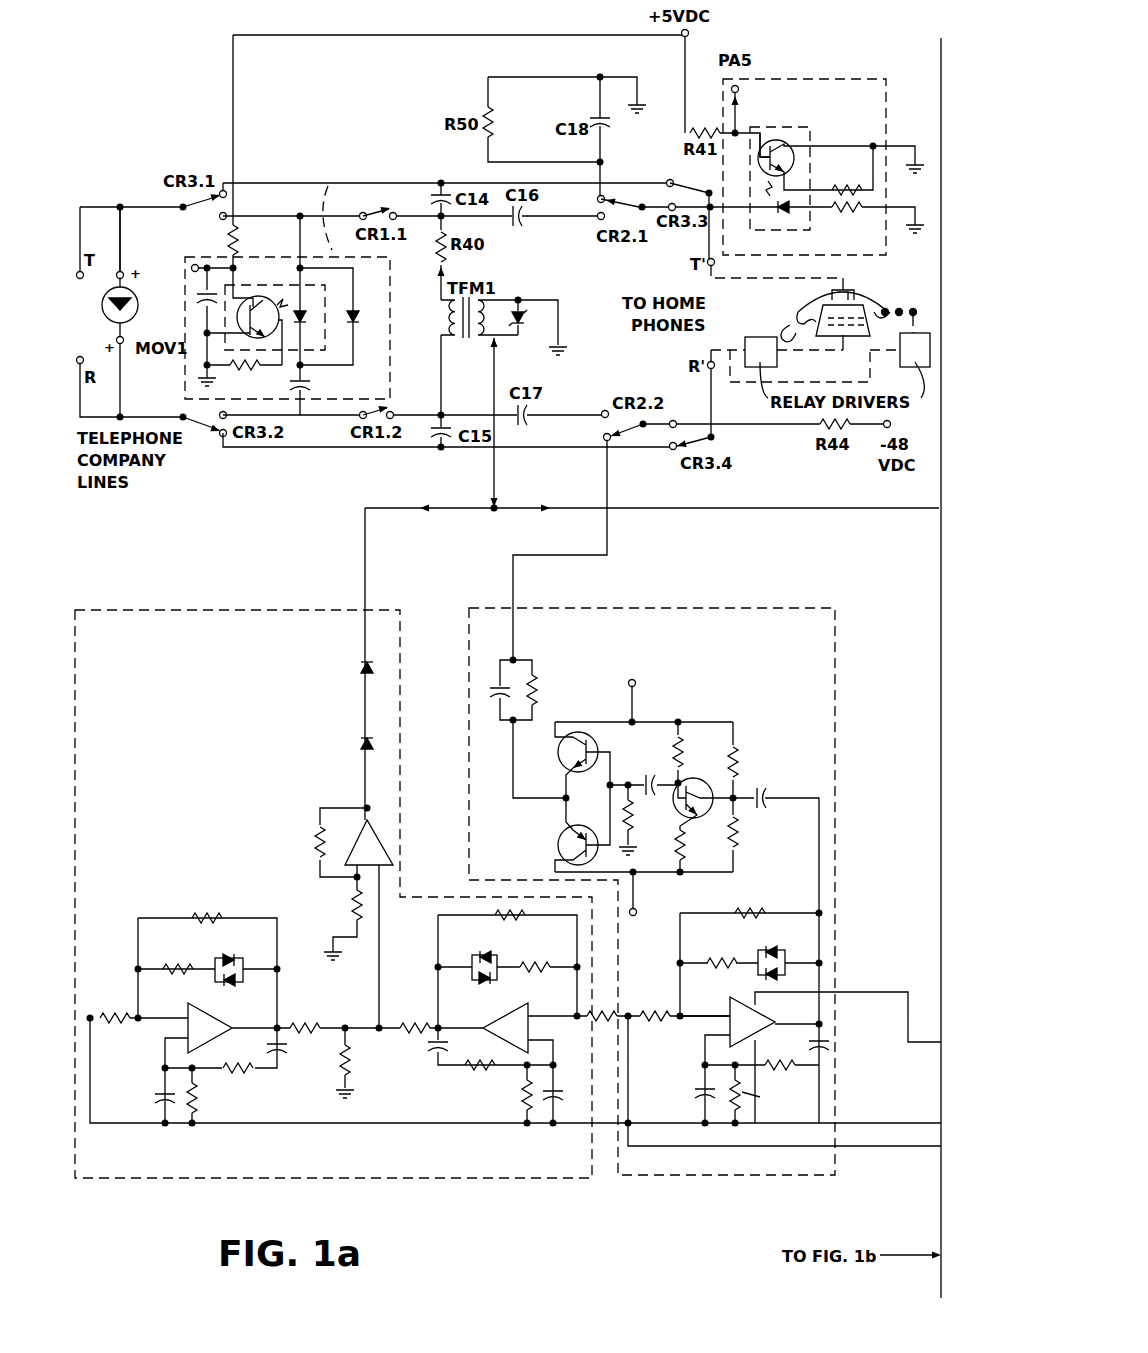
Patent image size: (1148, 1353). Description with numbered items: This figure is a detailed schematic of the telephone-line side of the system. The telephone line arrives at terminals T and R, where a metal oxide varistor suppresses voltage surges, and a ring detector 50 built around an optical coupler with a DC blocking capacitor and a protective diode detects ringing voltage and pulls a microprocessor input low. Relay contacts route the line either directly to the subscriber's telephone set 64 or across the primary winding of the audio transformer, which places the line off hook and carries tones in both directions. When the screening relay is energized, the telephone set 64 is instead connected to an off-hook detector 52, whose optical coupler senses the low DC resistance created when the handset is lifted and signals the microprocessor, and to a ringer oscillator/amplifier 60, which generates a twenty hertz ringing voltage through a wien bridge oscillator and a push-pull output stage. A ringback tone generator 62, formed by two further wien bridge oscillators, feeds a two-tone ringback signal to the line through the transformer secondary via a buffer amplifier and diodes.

The ring detector 50 is at (248, 257).
The off-hook detector 52 is at (850, 79).
The ringer oscillator/amplifier 60 is at (673, 608).
The ringback tone generator 62 is at (178, 610).
The telephone set 64 is at (866, 300).